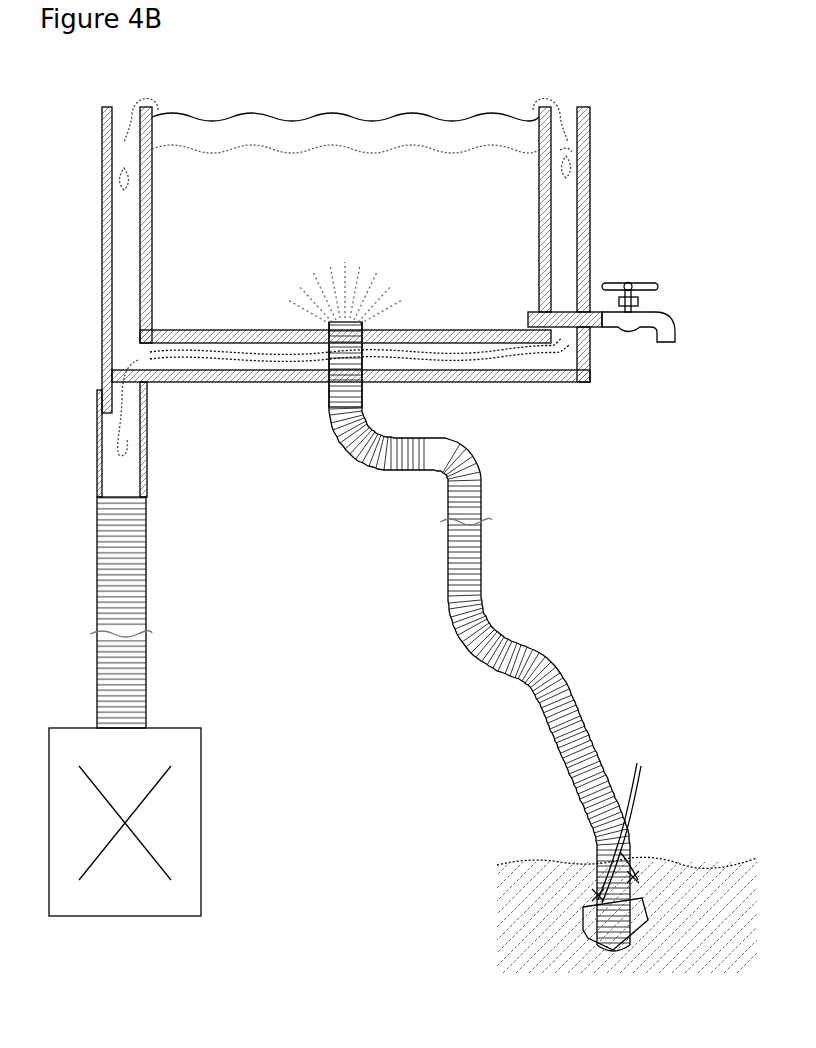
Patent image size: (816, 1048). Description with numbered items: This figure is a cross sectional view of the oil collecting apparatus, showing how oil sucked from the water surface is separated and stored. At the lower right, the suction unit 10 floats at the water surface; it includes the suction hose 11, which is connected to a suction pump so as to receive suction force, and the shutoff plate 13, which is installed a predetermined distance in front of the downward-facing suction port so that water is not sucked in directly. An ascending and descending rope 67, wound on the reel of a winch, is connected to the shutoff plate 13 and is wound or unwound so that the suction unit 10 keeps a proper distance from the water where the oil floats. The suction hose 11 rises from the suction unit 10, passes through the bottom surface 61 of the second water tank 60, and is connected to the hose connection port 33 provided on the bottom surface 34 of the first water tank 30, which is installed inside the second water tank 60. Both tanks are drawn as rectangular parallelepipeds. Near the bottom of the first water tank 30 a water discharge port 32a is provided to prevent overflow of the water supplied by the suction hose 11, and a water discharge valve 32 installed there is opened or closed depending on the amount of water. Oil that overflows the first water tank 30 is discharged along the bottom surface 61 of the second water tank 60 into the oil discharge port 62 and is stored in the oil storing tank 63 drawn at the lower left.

The suction unit 10 is at (595, 948).
The suction hose 11 is at (482, 538).
The shutoff plate 13 is at (640, 945).
The first water tank 30 is at (507, 225).
The water discharge valve 32 is at (672, 318).
The water discharge port 32a is at (585, 346).
The hose connection port 33 is at (327, 330).
The bottom surface 34 is at (496, 346).
The second water tank 60 is at (590, 147).
The bottom surface 61 is at (560, 382).
The oil discharge port 62 is at (147, 395).
The oil storing tank 63 is at (185, 806).
The ascending and descending rope 67 is at (638, 788).